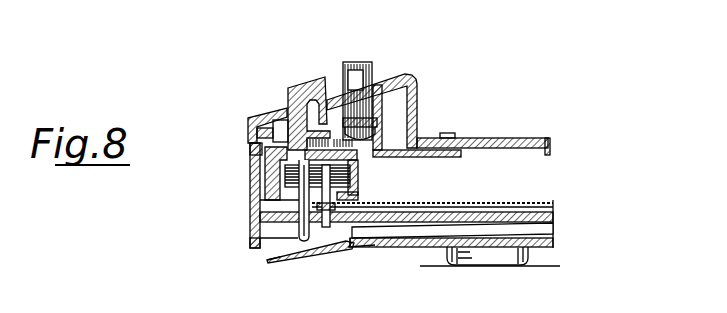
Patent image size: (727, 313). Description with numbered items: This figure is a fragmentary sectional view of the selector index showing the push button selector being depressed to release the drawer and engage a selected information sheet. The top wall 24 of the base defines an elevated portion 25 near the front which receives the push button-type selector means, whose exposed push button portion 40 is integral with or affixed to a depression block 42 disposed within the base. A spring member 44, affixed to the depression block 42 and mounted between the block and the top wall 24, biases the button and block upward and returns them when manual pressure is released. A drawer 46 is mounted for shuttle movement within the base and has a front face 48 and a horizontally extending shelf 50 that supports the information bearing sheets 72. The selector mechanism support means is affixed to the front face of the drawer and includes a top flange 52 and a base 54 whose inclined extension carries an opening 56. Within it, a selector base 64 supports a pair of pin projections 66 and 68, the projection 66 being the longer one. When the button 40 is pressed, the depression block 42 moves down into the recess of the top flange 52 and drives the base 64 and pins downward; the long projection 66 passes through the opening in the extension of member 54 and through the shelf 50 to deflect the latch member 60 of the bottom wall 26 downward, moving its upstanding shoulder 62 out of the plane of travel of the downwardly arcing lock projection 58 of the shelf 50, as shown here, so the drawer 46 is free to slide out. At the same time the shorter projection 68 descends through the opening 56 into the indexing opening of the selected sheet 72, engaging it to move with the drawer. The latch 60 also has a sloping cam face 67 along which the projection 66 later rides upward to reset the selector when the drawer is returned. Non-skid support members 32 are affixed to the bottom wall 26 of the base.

The push button portion 40 is at (312, 82).
The depression block 42 is at (277, 110).
The elevated portion 25 is at (418, 80).
The top wall 24 is at (490, 138).
The spring member 44 is at (413, 157).
The base of selector mechanism support means 54 is at (250, 166).
The drawer 46 is at (250, 202).
The base of selector mechanism 64 is at (250, 183).
The top flange 52 is at (358, 158).
The opening in extension of member 56 is at (358, 194).
The shelf portion 50 is at (556, 207).
The information bearing sheets 72 is at (510, 200).
The lock projection 58 is at (405, 236).
The bottom wall 26 is at (557, 244).
The upstanding shoulder 62 is at (346, 246).
The non-skid support members 32 is at (516, 263).
The pin projection 66 is at (296, 232).
The pin projection 68 is at (328, 228).
The latch member 60 is at (302, 255).
The sloping cam face 67 is at (270, 258).
The front face 48 is at (250, 244).